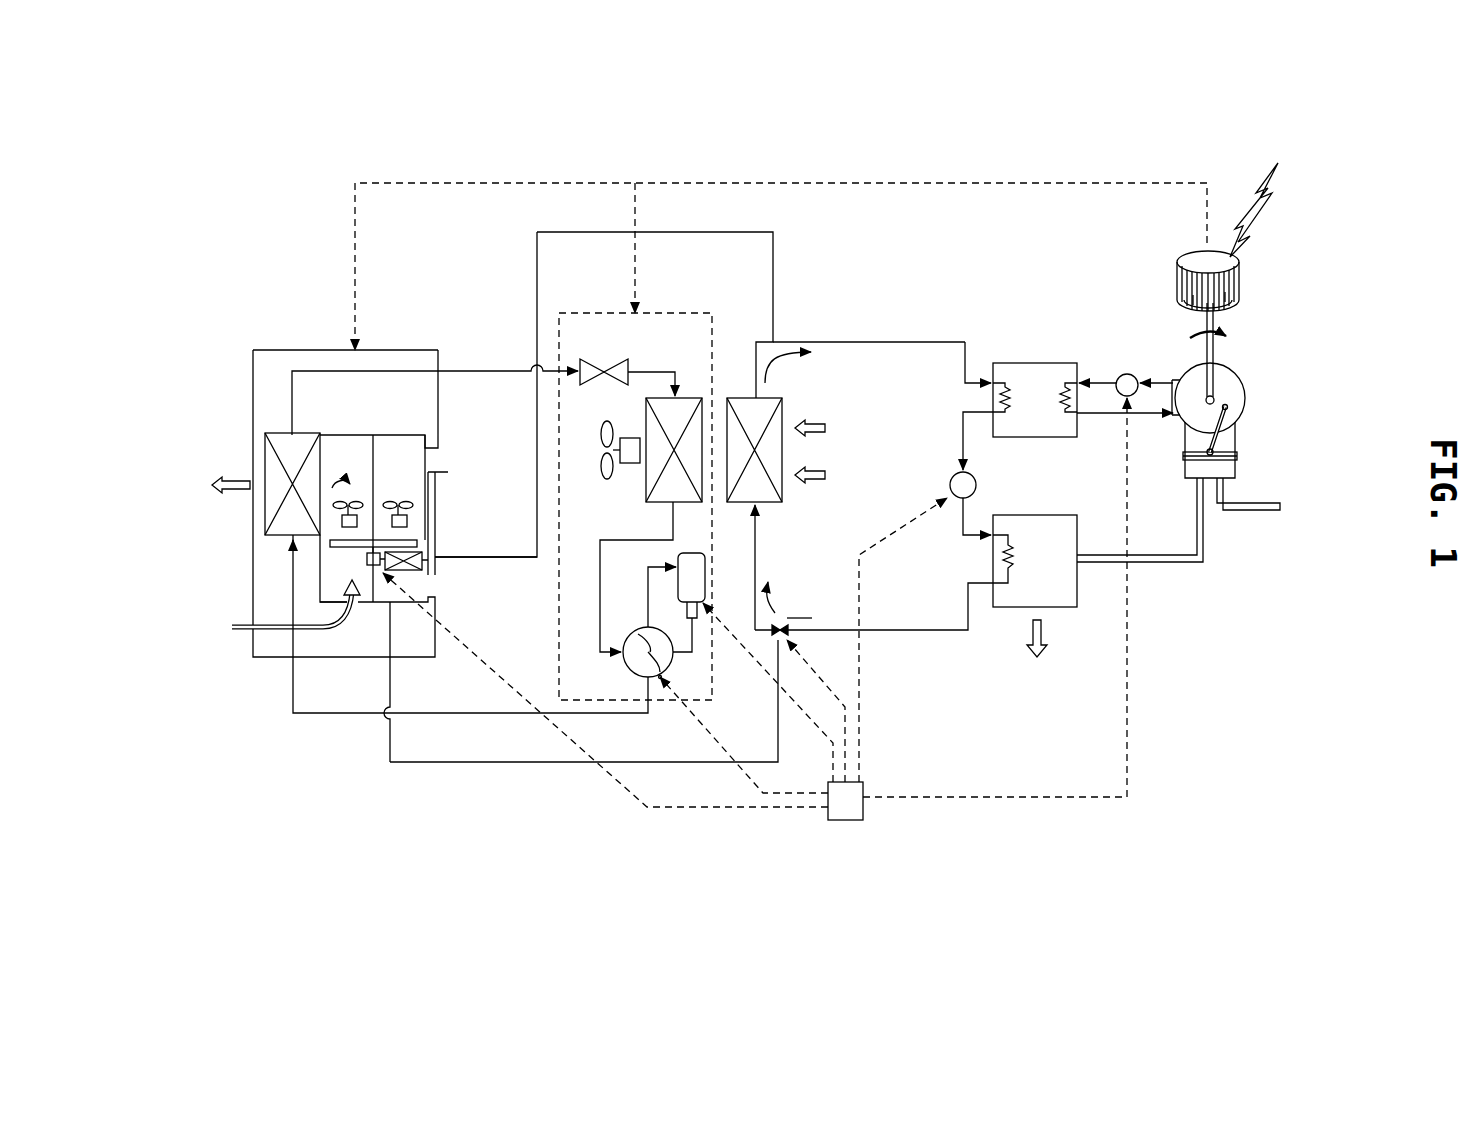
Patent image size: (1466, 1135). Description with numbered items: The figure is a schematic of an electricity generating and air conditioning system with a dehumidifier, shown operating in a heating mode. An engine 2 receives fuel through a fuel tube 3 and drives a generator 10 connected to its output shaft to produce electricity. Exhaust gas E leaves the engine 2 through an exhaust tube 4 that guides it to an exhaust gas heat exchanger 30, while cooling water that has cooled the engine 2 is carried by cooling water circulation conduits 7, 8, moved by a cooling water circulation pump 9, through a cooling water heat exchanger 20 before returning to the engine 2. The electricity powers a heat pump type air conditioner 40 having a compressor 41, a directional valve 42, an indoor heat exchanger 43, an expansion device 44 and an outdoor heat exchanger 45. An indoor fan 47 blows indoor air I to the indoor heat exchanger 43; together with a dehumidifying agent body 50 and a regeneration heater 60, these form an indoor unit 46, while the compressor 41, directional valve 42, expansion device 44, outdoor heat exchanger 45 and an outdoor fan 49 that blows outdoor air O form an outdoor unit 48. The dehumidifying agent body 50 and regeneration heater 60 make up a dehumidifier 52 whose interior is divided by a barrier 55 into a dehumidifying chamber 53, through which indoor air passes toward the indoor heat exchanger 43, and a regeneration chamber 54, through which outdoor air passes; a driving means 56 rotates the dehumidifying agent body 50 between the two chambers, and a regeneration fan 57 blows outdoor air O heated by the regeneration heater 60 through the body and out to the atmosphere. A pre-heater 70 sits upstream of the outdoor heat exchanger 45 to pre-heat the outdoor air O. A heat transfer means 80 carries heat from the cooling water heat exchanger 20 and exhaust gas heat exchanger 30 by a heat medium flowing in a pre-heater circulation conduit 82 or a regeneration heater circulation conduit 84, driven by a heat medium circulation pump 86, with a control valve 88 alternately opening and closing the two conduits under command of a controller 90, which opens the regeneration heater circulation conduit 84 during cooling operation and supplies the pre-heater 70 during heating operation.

The engine 2 is at (1245, 398).
The fuel tube 3 is at (1240, 505).
The exhaust tube 4 is at (1165, 562).
The cooling water circulation conduit 7 is at (1160, 383).
The cooling water circulation conduit 8 is at (1122, 398).
The cooling water circulation pump 9 is at (1120, 380).
The generator 10 is at (1240, 290).
The cooling water heat exchanger 20 is at (1027, 372).
The exhaust gas heat exchanger 30 is at (1010, 608).
The heat pump type air conditioner 40 is at (250, 803).
The compressor 41 is at (695, 578).
The directional valve 42 is at (637, 672).
The indoor heat exchanger 43 is at (267, 473).
The expansion device 44 is at (583, 358).
The outdoor heat exchanger 45 is at (665, 412).
The indoor unit 46 is at (273, 350).
The indoor fan 47 is at (333, 503).
The outdoor unit 48 is at (663, 679).
The outdoor fan 49 is at (602, 427).
The dehumidifying agent body 50 is at (417, 543).
The dehumidifier 52 is at (377, 625).
The dehumidifying chamber 53 is at (337, 578).
The regeneration chamber 54 is at (422, 520).
The barrier 55 is at (366, 457).
The driving means 56 is at (367, 560).
The regeneration fan 57 is at (390, 500).
The regeneration heater 60 is at (425, 562).
The pre-heater 70 is at (790, 405).
The heat transfer means 80 is at (882, 655).
The pre-heater circulation conduit 82 is at (756, 345).
The regeneration heater circulation conduit 84 is at (538, 232).
The heat medium circulation pump 86 is at (950, 480).
The control valve 88 is at (788, 618).
The controller 90 is at (853, 810).
The indoor air I is at (242, 630).
The outdoor air O is at (825, 475).
The exhaust gas E is at (1042, 622).